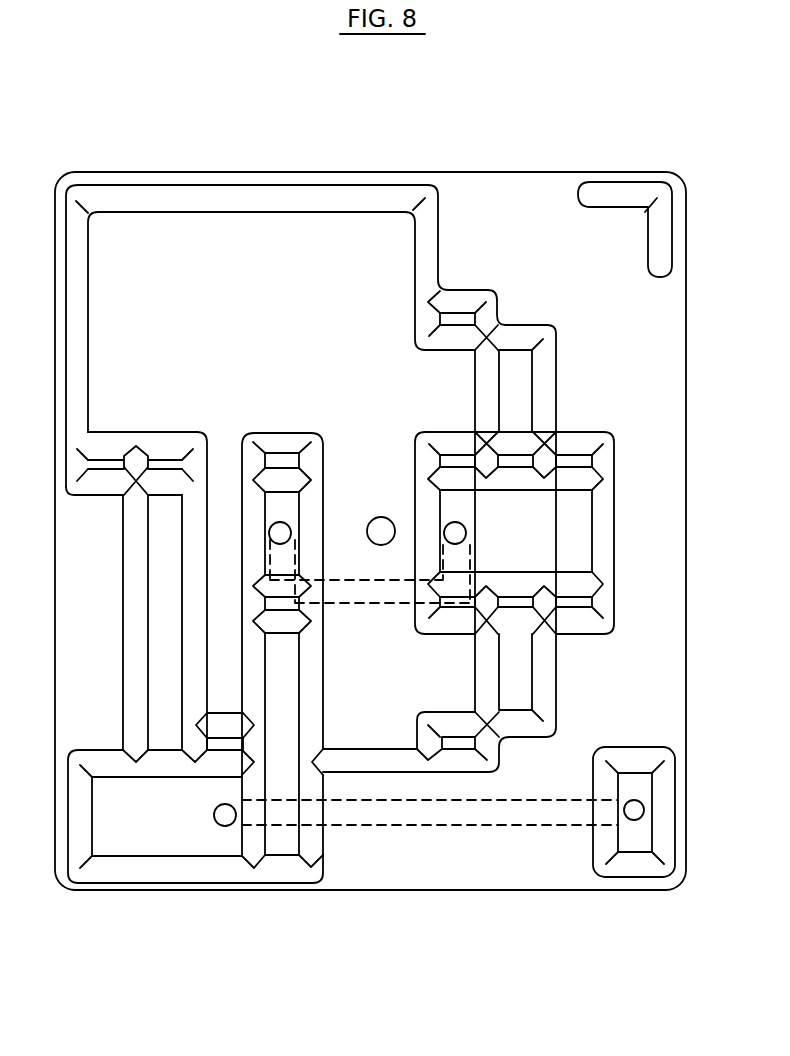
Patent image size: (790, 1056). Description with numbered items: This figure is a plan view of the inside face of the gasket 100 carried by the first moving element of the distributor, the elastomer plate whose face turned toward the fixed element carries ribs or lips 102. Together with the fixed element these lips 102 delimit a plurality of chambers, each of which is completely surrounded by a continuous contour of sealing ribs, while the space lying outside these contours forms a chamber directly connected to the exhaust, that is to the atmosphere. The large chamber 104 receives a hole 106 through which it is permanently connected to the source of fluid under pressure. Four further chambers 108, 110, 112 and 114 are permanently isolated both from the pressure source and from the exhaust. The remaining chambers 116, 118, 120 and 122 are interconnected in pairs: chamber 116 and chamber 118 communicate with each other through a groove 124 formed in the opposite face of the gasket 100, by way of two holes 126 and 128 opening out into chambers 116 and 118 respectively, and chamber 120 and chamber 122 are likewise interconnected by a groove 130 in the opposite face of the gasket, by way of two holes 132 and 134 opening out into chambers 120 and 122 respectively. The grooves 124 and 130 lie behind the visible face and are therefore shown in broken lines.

The gasket 100 is at (524, 168).
The ribs or lips 102 is at (262, 197).
The chamber 104 is at (236, 323).
The hole 106 is at (392, 520).
The chamber 108 is at (157, 555).
The chamber 110 is at (292, 717).
The chamber 112 is at (520, 388).
The chamber 114 is at (520, 660).
The chamber 116 is at (288, 504).
The chamber 118 is at (528, 538).
The chamber 120 is at (128, 824).
The chamber 122 is at (637, 838).
The groove 124 is at (364, 590).
The hole 126 is at (276, 540).
The hole 128 is at (485, 507).
The groove 130 is at (433, 830).
The hole 132 is at (218, 808).
The hole 134 is at (638, 810).